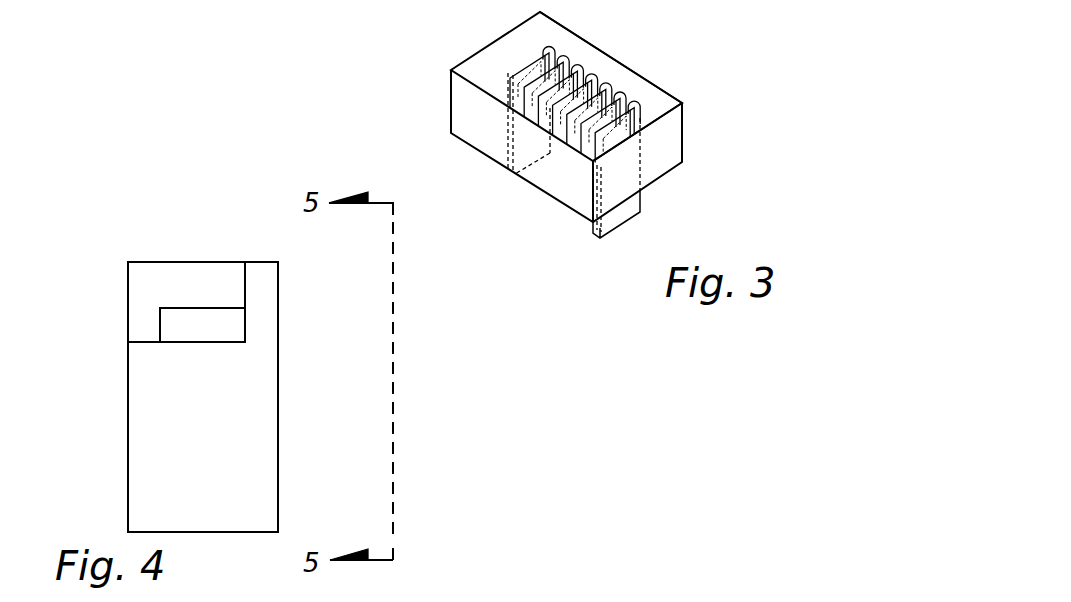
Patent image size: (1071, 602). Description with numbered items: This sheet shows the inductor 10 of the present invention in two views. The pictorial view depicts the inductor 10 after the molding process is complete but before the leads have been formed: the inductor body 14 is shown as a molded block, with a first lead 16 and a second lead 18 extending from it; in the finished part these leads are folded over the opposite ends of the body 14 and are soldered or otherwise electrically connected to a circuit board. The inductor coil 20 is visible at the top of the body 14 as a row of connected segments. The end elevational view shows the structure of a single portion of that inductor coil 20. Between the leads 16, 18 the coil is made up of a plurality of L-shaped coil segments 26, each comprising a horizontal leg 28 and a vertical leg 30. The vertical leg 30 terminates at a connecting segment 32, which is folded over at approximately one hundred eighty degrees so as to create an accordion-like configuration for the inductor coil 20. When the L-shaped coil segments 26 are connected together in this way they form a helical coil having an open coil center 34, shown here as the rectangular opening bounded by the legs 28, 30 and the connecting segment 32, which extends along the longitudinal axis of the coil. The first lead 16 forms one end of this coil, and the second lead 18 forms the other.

In FIG. 3, the inductor 10 is at (506, 42).
In FIG. 3, the inductor body 14 is at (653, 100).
In FIG. 3, the first lead 16 is at (628, 218).
In FIG. 4, the first lead 16 is at (235, 532).
In FIG. 3, the second lead 18 is at (522, 170).
In FIG. 3, the inductor coil 20 is at (571, 54).
In FIG. 4, the inductor coil 20 is at (146, 250).
In FIG. 4, the L-shaped coil segment 26 is at (286, 350).
In FIG. 4, the horizontal leg 28 is at (221, 347).
In FIG. 4, the vertical leg 30 is at (135, 328).
In FIG. 4, the connecting segment 32 is at (268, 267).
In FIG. 4, the open coil center 34 is at (232, 325).